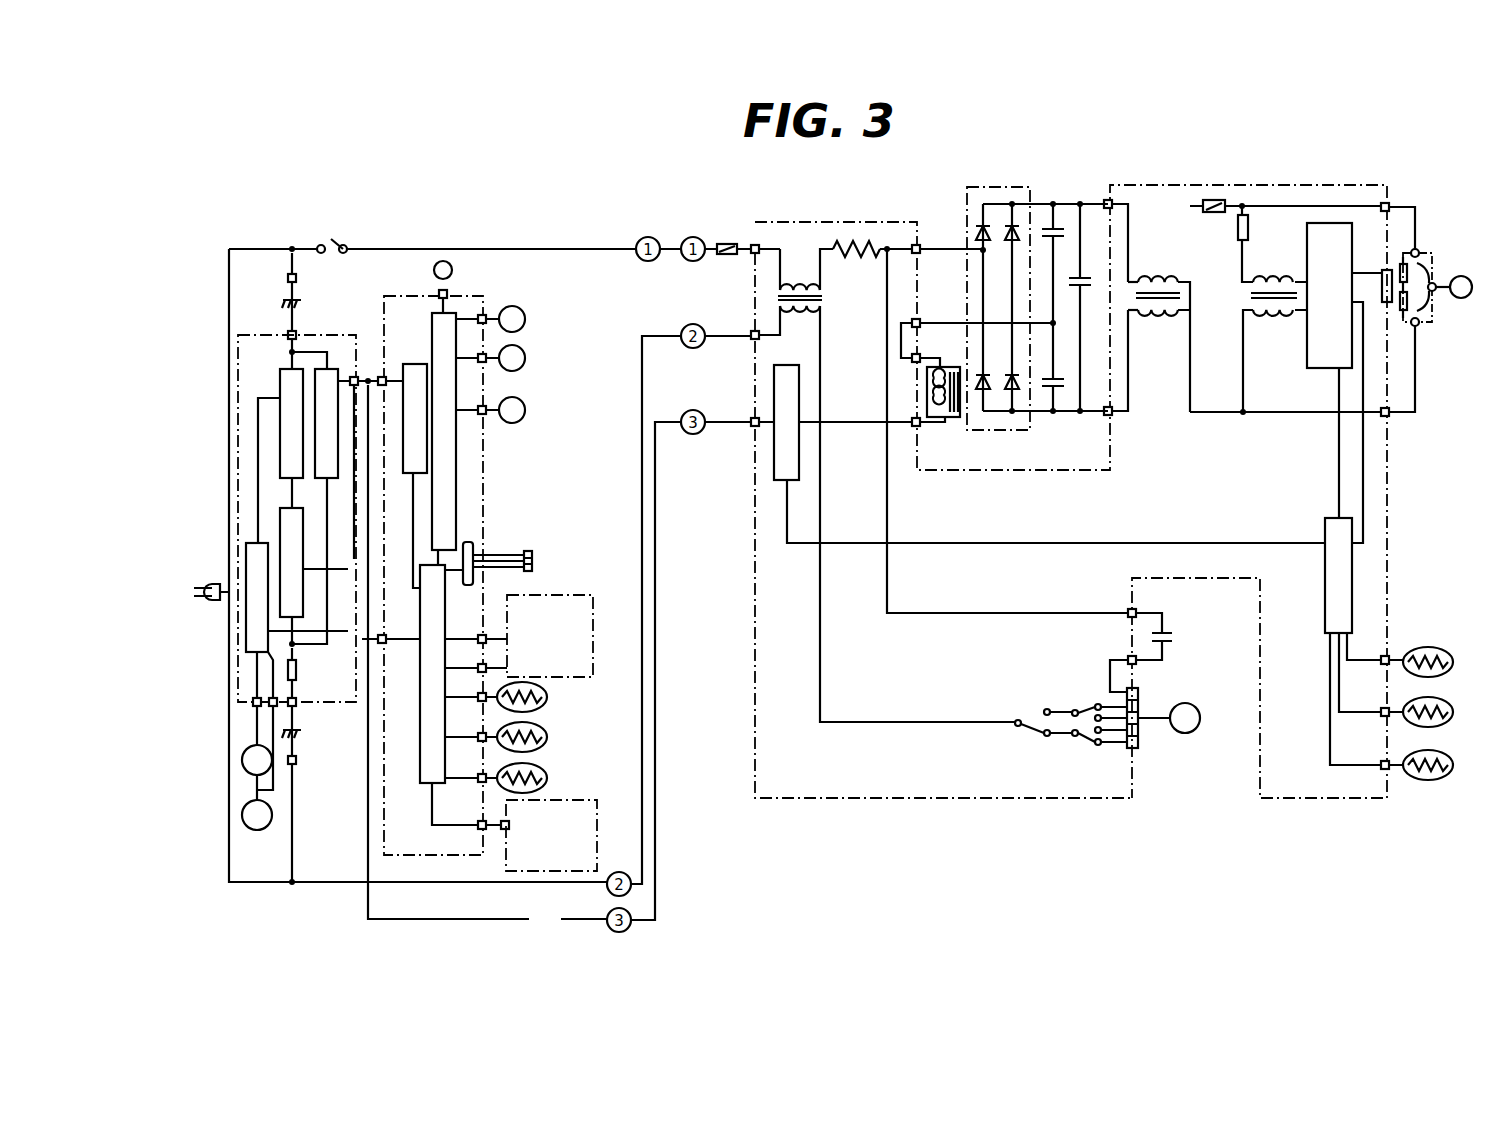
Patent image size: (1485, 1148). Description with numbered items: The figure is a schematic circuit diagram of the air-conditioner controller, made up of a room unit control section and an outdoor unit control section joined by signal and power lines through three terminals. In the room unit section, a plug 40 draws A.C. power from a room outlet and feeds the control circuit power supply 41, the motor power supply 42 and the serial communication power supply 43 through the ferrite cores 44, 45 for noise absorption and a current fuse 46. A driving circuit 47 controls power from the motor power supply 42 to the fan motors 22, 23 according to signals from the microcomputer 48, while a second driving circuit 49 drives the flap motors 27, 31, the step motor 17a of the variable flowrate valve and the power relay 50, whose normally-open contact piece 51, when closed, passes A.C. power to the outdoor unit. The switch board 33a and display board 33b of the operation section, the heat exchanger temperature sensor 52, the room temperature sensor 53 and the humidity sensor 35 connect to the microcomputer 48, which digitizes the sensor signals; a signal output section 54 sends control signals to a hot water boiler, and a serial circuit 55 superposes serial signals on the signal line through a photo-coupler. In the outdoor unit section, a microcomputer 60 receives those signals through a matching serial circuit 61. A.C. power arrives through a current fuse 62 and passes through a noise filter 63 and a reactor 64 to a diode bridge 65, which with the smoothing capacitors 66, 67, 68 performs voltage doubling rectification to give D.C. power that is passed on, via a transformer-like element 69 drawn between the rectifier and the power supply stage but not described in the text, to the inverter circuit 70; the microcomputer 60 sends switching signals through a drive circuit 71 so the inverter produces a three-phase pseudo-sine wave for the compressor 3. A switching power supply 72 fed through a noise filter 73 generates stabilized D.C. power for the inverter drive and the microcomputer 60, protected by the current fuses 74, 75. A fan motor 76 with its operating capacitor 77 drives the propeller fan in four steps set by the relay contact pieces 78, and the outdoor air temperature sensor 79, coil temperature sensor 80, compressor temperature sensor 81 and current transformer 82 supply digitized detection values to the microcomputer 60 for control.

The compressor 3 is at (1460, 276).
The step motor 17a is at (525, 410).
The fan motor 22 is at (242, 760).
The fan motor 23 is at (242, 815).
The flap motor 27 is at (525, 319).
The flap motor 31 is at (525, 358).
The switch board 33a is at (597, 845).
The display board 33b is at (575, 594).
The humidity sensor 35 is at (547, 778).
The plug 40 is at (205, 604).
The power supply for control circuit 41 is at (280, 525).
The power supply for driving the motors 42 is at (280, 384).
The power supply for serial communication 43 is at (313, 428).
The ferrite core 44 is at (285, 305).
The ferrite core 45 is at (302, 731).
The current fuse 46 is at (297, 670).
The driving circuit 47 is at (246, 560).
The microcomputer 48 is at (420, 783).
The driving circuit 49 is at (456, 470).
The power relay 50 is at (453, 270).
The normally-open contact piece 51 is at (336, 240).
The temperature sensor 52 is at (547, 737).
The temperature sensor 53 is at (547, 697).
The signal output section 54 is at (532, 551).
The serial circuit 55 is at (412, 364).
The microcomputer 60 is at (1325, 520).
The serial circuit 61 is at (774, 463).
The current fuse 62 is at (727, 243).
The noise filter 63 is at (826, 297).
The reactor 64 is at (945, 418).
The diode bridge 65 is at (1010, 431).
The smoothing capacitor 66 is at (1062, 392).
The smoothing capacitor 67 is at (1086, 276).
The smoothing capacitor 68 is at (1060, 228).
The transformer 69 is at (1188, 297).
The inverter circuit 70 is at (1418, 327).
The drive circuit 71 is at (1392, 268).
The switching power supply 72 is at (1303, 352).
The noise filter 73 is at (1243, 300).
The current fuse 74 is at (1213, 199).
The current fuse 75 is at (1250, 228).
The fan motor 76 is at (1192, 733).
The capacitor 77 is at (1176, 638).
The relay contact pieces 78 is at (1068, 708).
The outdoor air temperature sensor 79 is at (1425, 647).
The coil temperature sensor 80 is at (1410, 722).
The compressor temperature sensor 81 is at (1418, 781).
The current transformer 82 is at (853, 243).